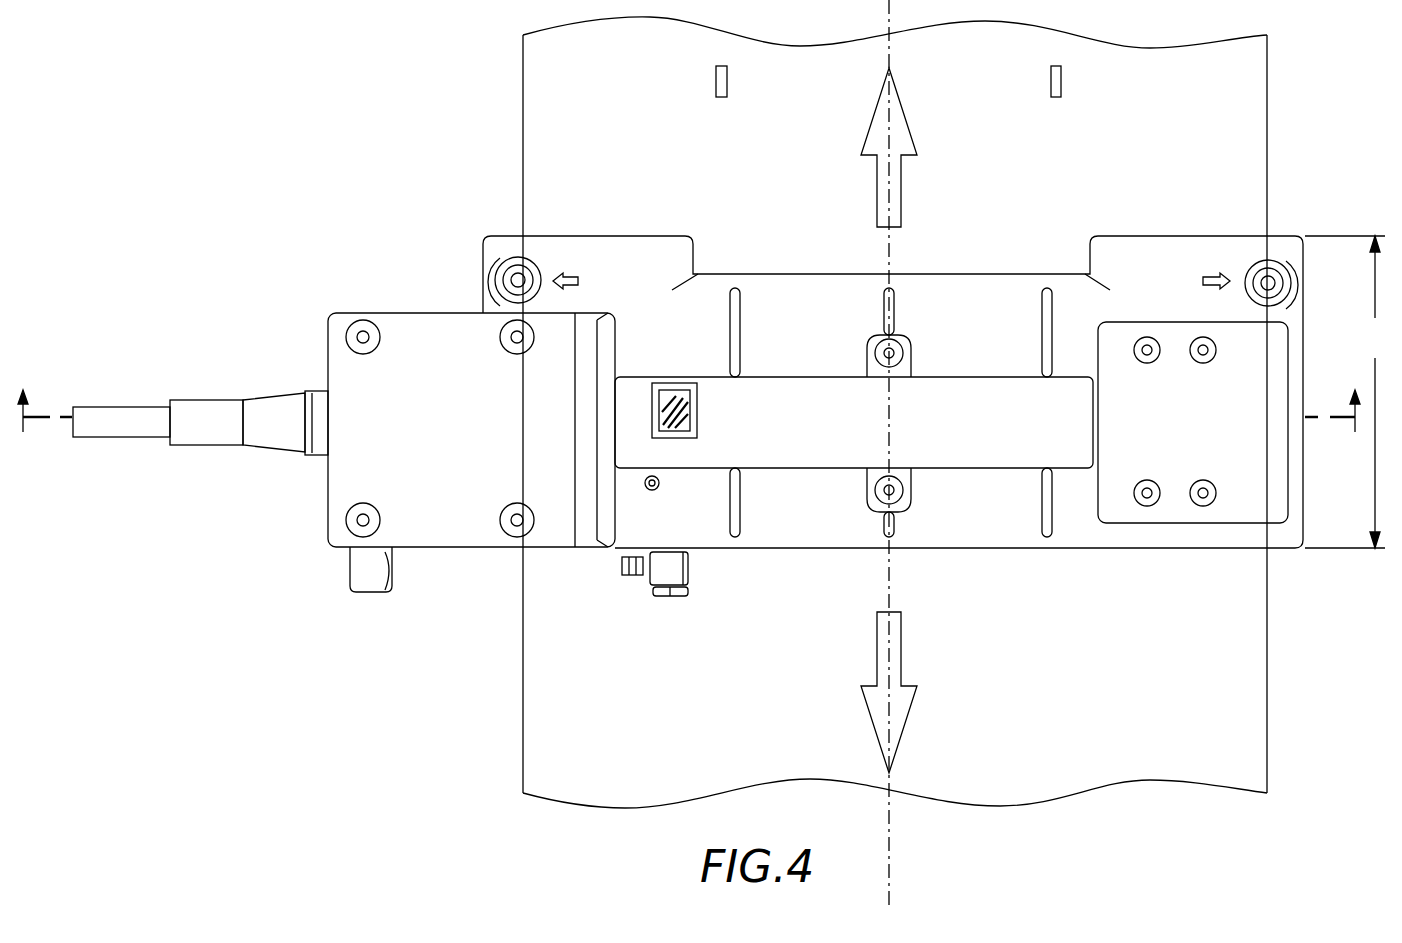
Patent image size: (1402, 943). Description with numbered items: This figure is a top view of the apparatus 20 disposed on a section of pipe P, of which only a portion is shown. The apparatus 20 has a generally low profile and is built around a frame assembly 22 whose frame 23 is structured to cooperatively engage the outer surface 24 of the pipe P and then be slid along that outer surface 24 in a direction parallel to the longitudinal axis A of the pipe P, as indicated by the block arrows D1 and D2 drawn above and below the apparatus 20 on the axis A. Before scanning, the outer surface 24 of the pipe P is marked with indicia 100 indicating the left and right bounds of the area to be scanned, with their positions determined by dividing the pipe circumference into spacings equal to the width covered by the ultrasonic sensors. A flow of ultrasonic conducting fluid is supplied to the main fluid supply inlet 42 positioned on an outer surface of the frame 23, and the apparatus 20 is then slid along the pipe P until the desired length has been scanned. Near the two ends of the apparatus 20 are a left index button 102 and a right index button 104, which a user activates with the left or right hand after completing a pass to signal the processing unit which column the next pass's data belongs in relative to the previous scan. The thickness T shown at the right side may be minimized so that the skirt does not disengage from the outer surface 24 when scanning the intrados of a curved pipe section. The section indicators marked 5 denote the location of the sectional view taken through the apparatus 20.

The apparatus 20 is at (1112, 198).
The frame assembly 22 is at (344, 384).
The frame 23 is at (330, 363).
The outer surface 24 is at (545, 72).
The main fluid supply inlet 42 is at (622, 565).
The indicia 100 is at (718, 78).
The left index button 102 is at (516, 278).
The right index button 104 is at (1270, 285).
The pipe P is at (1248, 78).
The longitudinal axis A is at (893, 837).
The block arrow D1 is at (889, 147).
The block arrow D2 is at (889, 692).
The thickness T is at (1345, 392).
The section line 5 is at (689, 436).